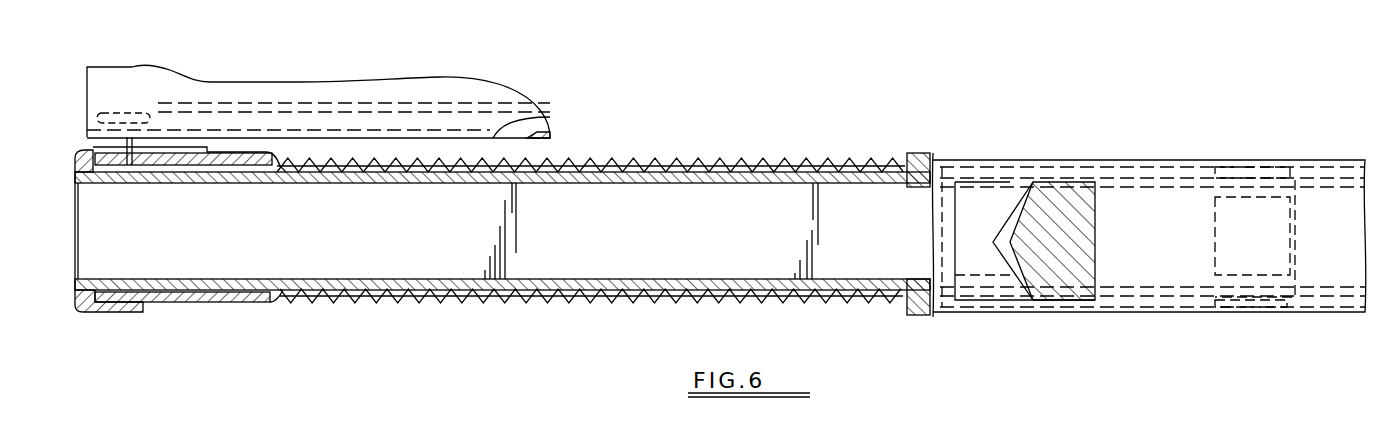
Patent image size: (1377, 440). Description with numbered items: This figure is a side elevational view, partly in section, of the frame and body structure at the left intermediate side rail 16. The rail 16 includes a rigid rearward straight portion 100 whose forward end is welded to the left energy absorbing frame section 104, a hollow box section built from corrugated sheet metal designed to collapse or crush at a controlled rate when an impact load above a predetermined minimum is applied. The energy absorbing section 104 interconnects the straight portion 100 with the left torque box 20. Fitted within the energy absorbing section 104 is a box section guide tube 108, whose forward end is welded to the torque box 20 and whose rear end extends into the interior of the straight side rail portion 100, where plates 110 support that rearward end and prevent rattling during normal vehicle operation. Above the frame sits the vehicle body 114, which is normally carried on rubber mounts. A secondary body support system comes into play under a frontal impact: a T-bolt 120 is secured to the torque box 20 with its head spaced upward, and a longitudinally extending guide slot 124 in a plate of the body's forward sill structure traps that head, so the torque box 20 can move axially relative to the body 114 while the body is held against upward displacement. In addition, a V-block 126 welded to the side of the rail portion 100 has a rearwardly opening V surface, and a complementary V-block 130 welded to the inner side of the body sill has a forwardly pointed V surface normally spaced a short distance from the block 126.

The left intermediate side rail 16 is at (995, 152).
The left torque box 20 is at (110, 306).
The rigid rearward straight portion 100 is at (1100, 162).
The left energy absorbing frame section 104 is at (757, 148).
The box section guide tube 108 is at (237, 303).
The plates 110 is at (1240, 172).
The vehicle body 114 is at (172, 64).
The left T-bolt 120 is at (122, 120).
The longitudinally extending guide slot 124 is at (260, 130).
The V-block 126 is at (985, 283).
The complementary V-block 130 is at (1088, 262).